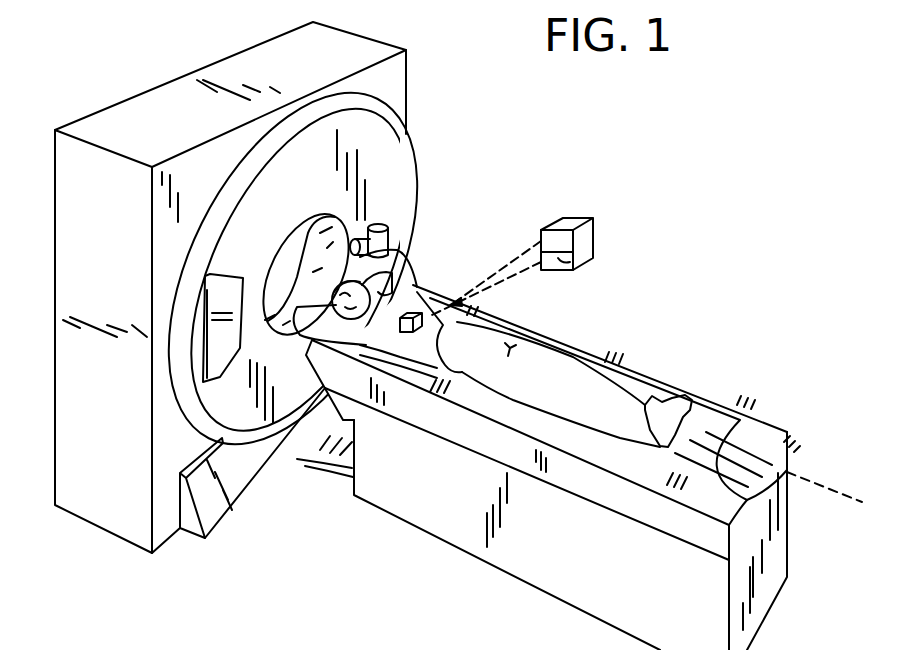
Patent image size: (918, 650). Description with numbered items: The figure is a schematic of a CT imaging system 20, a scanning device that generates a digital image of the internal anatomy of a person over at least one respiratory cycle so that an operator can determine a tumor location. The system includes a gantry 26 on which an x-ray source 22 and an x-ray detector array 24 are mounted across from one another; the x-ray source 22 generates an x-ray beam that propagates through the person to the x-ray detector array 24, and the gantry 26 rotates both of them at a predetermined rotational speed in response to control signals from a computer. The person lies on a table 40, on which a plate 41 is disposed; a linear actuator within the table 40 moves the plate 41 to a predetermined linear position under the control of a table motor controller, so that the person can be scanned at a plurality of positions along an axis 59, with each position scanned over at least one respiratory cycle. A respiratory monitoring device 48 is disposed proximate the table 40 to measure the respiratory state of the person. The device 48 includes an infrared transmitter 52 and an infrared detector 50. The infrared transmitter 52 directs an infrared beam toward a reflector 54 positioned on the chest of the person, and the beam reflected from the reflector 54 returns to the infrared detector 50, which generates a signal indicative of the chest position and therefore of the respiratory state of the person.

The CT imaging system 20 is at (513, 154).
The x-ray source 22 is at (398, 248).
The x-ray detector array 24 is at (216, 355).
The gantry 26 is at (378, 124).
The table 40 is at (585, 578).
The plate 41 is at (765, 425).
The respiratory monitoring device 48 is at (592, 236).
The infrared detector 50 is at (541, 237).
The infrared transmitter 52 is at (572, 262).
The reflector 54 is at (395, 328).
The axis 59 is at (823, 473).